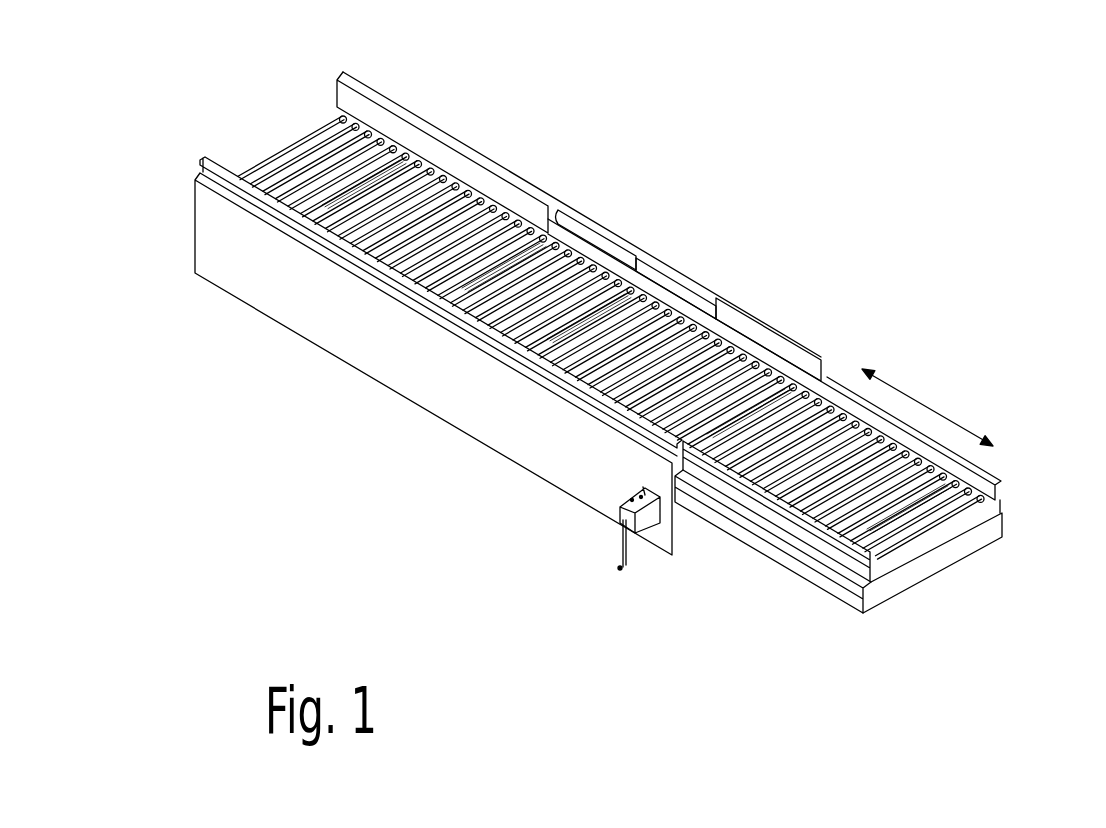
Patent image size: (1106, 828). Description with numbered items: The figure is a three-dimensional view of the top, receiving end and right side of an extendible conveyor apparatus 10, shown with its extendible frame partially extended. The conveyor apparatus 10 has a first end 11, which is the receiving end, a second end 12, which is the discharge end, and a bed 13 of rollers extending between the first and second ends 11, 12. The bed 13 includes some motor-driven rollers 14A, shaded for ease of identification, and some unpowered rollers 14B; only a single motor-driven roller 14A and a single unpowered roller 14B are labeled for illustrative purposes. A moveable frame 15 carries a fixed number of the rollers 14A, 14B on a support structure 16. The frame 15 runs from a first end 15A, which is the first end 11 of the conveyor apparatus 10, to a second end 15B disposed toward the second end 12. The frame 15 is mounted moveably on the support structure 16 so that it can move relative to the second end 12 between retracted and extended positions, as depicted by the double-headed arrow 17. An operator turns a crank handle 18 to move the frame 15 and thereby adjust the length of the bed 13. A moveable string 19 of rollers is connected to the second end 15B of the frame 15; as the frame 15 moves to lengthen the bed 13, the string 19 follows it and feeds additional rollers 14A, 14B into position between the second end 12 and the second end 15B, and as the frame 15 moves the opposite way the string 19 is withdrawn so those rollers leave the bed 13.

The extendible conveyor apparatus 10 is at (637, 326).
The first end 11 is at (963, 540).
The second end 12 is at (589, 321).
The bed of rollers 13 is at (598, 345).
The motor-driven roller 14A is at (622, 265).
The unpowered roller 14B is at (712, 316).
The moveable frame 15 is at (874, 530).
The first end of the frame 15A is at (993, 487).
The second end of the frame 15B is at (573, 207).
The support structure 16 is at (527, 450).
The double-headed arrow 17 is at (927, 403).
The crank handle 18 is at (618, 546).
The string of rollers 19 is at (390, 190).